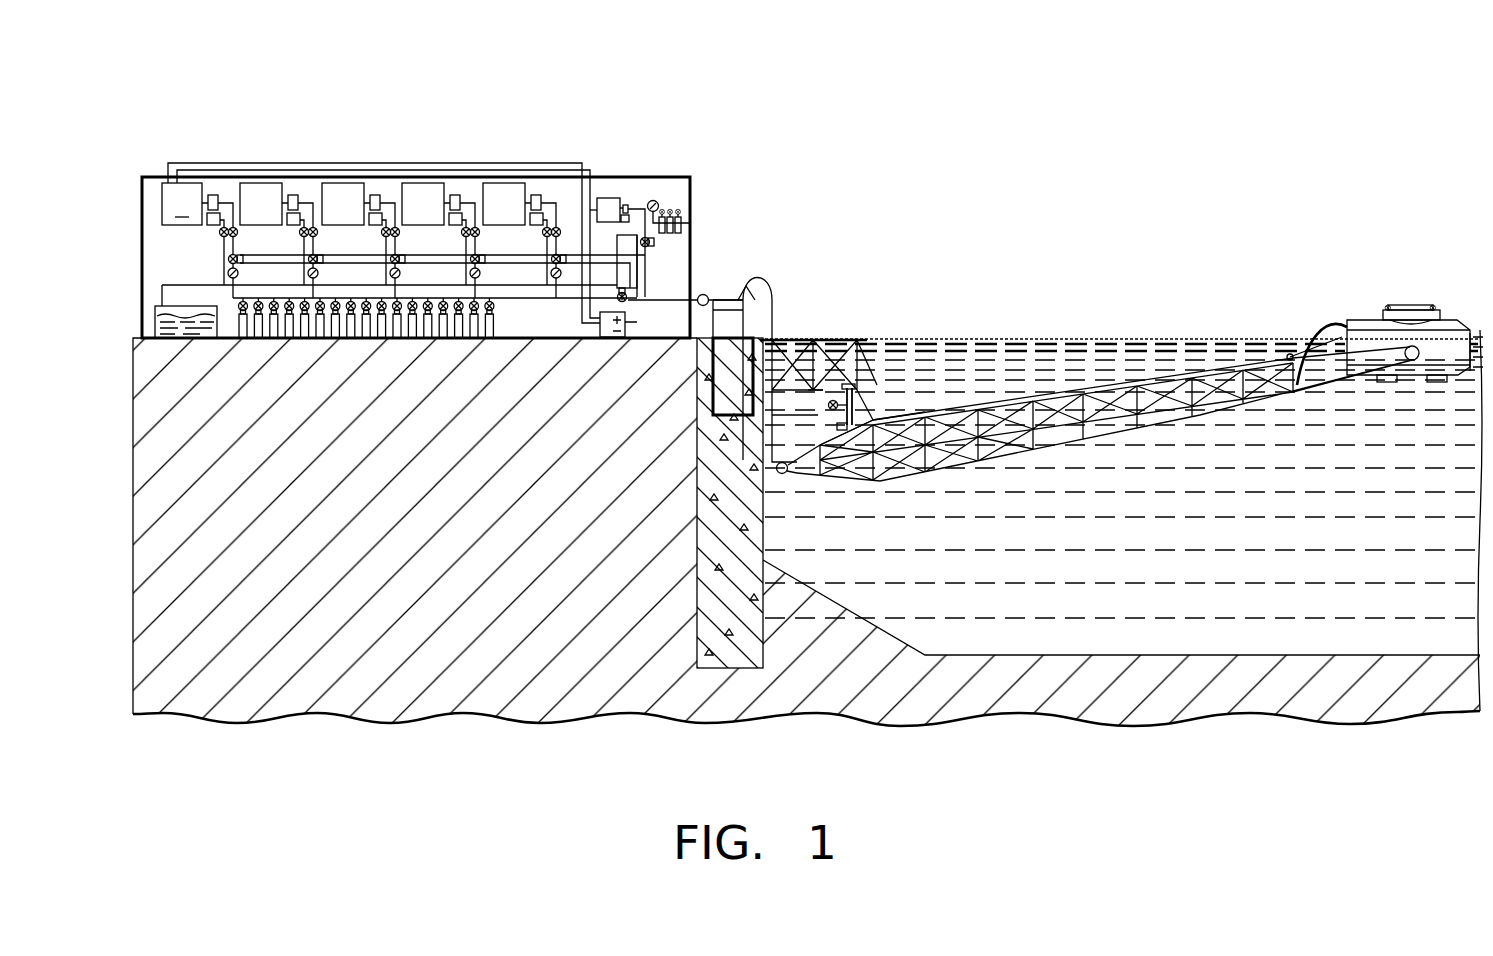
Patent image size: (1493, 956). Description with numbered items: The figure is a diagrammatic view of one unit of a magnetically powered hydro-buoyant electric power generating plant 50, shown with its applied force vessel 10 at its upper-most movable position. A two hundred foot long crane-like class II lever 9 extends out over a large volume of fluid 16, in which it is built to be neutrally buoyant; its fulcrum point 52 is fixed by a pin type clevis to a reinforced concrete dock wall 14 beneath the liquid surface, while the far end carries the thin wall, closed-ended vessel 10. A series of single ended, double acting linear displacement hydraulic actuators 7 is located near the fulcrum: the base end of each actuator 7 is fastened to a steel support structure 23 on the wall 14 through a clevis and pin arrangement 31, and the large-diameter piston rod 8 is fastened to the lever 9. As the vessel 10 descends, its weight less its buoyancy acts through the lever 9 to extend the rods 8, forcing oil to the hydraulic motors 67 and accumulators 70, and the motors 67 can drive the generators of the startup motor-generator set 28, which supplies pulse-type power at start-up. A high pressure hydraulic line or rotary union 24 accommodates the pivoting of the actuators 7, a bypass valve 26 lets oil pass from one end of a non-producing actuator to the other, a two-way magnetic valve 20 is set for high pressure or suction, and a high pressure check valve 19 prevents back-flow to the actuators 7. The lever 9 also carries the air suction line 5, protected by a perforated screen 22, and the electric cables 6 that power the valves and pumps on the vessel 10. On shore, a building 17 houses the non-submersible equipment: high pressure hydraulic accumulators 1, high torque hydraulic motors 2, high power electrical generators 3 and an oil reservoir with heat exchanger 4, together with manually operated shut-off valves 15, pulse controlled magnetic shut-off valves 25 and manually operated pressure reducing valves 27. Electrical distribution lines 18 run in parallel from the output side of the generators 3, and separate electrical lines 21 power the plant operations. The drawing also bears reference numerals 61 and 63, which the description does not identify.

The high pressure hydraulic accumulators 1 is at (492, 330).
The high torque, high pressure hydraulic motors 2 is at (297, 195).
The high power electrical generators 3 is at (182, 204).
The oil reservoir with heat exchanger 4 is at (185, 312).
The air suction line 5 is at (760, 279).
The electric cables (electrical input power lines) 6 is at (715, 310).
The linear displacement hydraulic actuators 7 is at (888, 380).
The piston rod 8 is at (835, 426).
The crane-like class II lever 9 is at (1163, 355).
The applied force vessel (A.F.V.) 10 is at (1418, 300).
The reinforced concrete dock wall 14 is at (712, 474).
The manually operated shut-off valves 15 is at (397, 232).
The fluid (liquid mass) 16 is at (1182, 612).
The building 17 is at (143, 176).
The electrical distribution lines 18 is at (236, 163).
The high pressure check valve 19 is at (707, 296).
The two-way magnetic valve 20 is at (756, 325).
The electrical lines 21 is at (615, 337).
The perforated screen 22 is at (748, 285).
The steel support structure 23 is at (818, 392).
The high pressure hydraulic line or rotary union 24 is at (809, 392).
The pulse controlled magnetically operated shut-off valves 25 is at (475, 260).
The actuator bypass valve 26 is at (860, 414).
The manually operated pressure reducing valves 27 is at (658, 203).
The motor-generator set 28 is at (607, 198).
The clevis and pin arrangement 31 is at (850, 382).
The magnetically powered hydro-buoyant electric power generating plant 50 is at (1275, 130).
The fulcrum point 52 is at (787, 473).
The brace 61 is at (868, 397).
The lower chord 63 is at (912, 408).
The hydraulic motors 67 is at (627, 205).
The accumulators 70 is at (693, 222).